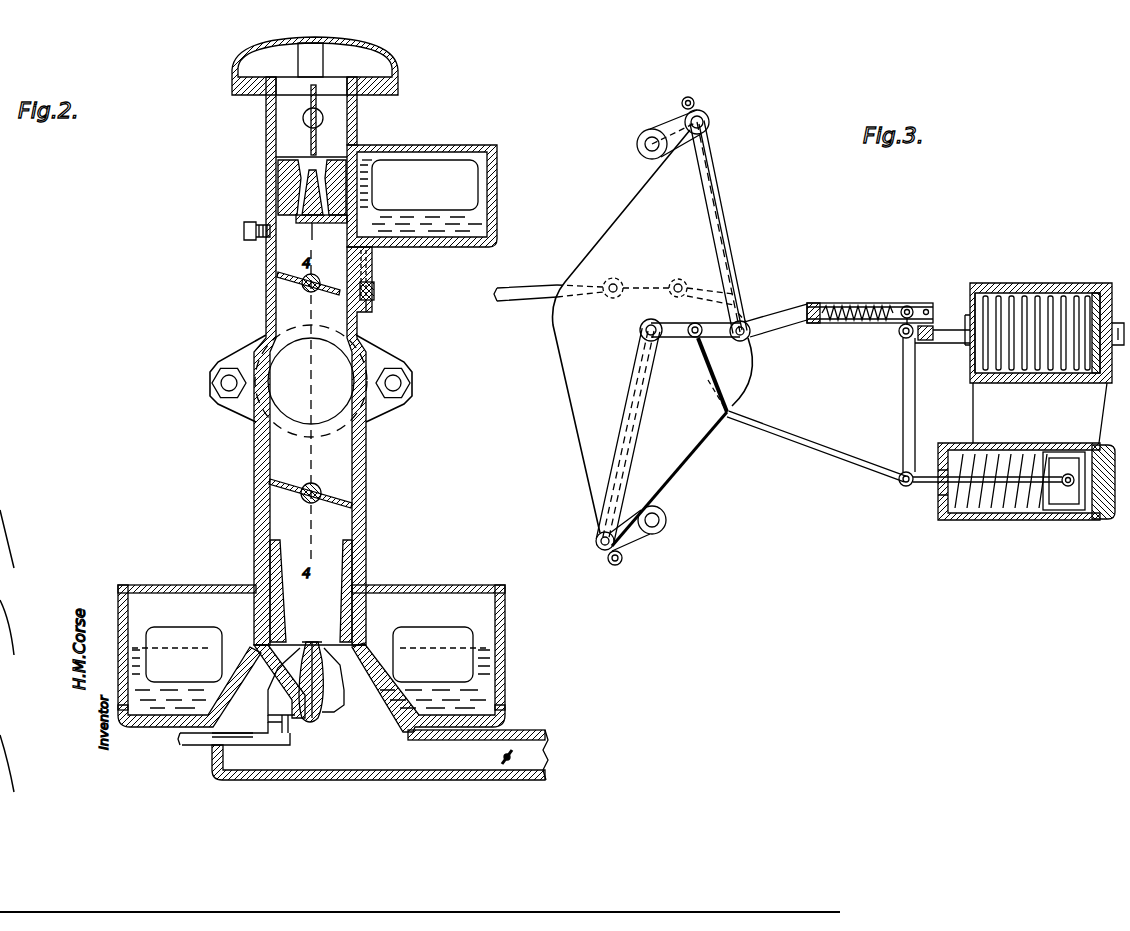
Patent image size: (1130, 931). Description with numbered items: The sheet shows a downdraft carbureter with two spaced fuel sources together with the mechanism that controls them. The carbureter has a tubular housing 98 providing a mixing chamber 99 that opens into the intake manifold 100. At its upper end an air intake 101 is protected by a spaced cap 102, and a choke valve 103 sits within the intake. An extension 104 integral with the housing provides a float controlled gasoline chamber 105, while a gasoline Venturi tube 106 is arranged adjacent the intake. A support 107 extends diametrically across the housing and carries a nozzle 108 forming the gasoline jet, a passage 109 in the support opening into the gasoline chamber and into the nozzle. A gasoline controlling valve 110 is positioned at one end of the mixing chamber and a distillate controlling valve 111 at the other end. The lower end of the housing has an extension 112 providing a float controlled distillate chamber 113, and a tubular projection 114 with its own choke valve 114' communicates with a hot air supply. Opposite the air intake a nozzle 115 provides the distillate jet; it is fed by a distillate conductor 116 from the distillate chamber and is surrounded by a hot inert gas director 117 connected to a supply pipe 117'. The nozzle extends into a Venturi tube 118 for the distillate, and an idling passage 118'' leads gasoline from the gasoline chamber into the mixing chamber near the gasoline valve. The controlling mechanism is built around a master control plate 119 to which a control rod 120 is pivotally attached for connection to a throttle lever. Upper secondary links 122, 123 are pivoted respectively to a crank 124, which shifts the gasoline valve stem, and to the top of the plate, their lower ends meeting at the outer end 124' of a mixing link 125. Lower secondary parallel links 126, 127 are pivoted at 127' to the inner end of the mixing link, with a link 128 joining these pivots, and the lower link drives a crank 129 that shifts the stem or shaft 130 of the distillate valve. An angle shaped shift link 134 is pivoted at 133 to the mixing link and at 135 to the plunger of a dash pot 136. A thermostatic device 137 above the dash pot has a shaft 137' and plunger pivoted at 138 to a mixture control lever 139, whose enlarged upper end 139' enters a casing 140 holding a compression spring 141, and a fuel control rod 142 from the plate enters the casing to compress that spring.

In FIG. 2, the tubular housing 98 is at (368, 460).
In FIG. 2, the mixing chamber 99 is at (266, 458).
In FIG. 2, the intake manifold 100 is at (320, 376).
In FIG. 2, the air intake 101 is at (336, 122).
In FIG. 2, the spaced cap 102 is at (372, 63).
In FIG. 2, the choke valve 103 is at (310, 103).
In FIG. 2, the extension 104 is at (498, 196).
In FIG. 2, the float controlled gasoline chamber 105 is at (482, 166).
In FIG. 2, the gasoline Venturi tube 106 is at (283, 184).
In FIG. 2, the support 107 is at (262, 214).
In FIG. 2, the nozzle 108 is at (376, 182).
In FIG. 2, the passage 109 is at (344, 232).
In FIG. 2, the gasoline controlling valve 110 is at (372, 271).
In FIG. 2, the distillate controlling valve 111 is at (342, 498).
In FIG. 2, the extension 112 is at (506, 642).
In FIG. 2, the float controlled distillate chamber 113 is at (482, 602).
In FIG. 2, the tubular projection 114 is at (388, 730).
In FIG. 2, the choke valve 114' is at (555, 761).
In FIG. 2, the nozzle 115 is at (326, 648).
In FIG. 2, the distillate conductor 116 is at (307, 718).
In FIG. 2, the hot inert gas director 117 is at (315, 681).
In FIG. 2, the supply pipe 117' is at (218, 750).
In FIG. 2, the Venturi tube 118 is at (344, 590).
In FIG. 2, the passage 118'' is at (406, 294).
In FIG. 3, the master control plate 119 is at (656, 466).
In FIG. 3, the control rod 120 is at (526, 298).
In FIG. 3, the upper secondary link 122 is at (721, 230).
In FIG. 3, the upper secondary link 123 is at (752, 300).
In FIG. 3, the crank 124 is at (673, 152).
In FIG. 3, the outer end of mixing link 124' is at (774, 336).
In FIG. 3, the mixing link 125 is at (645, 136).
In FIG. 3, the lower secondary parallel link 126 is at (622, 453).
In FIG. 3, the lower secondary parallel link 127 is at (590, 435).
In FIG. 3, the pivot 127' is at (651, 291).
In FIG. 3, the link 128 is at (640, 329).
In FIG. 3, the crank 129 is at (650, 543).
In FIG. 3, the stem or shaft 130 is at (666, 522).
In FIG. 3, the pivot 133 is at (692, 340).
In FIG. 3, the angle shaped shift link 134 is at (797, 442).
In FIG. 3, the pivot 135 is at (903, 488).
In FIG. 3, the dash pot 136 is at (1023, 520).
In FIG. 3, the thermostatic device 137 is at (1044, 336).
In FIG. 3, the shaft 137' is at (950, 287).
In FIG. 3, the pivot 138 is at (898, 334).
In FIG. 3, the mixture control lever 139 is at (927, 395).
In FIG. 3, the enlarged upper end 139' is at (937, 291).
In FIG. 3, the casing 140 is at (905, 305).
In FIG. 3, the compression spring 141 is at (862, 303).
In FIG. 3, the fuel control rod 142 is at (805, 316).